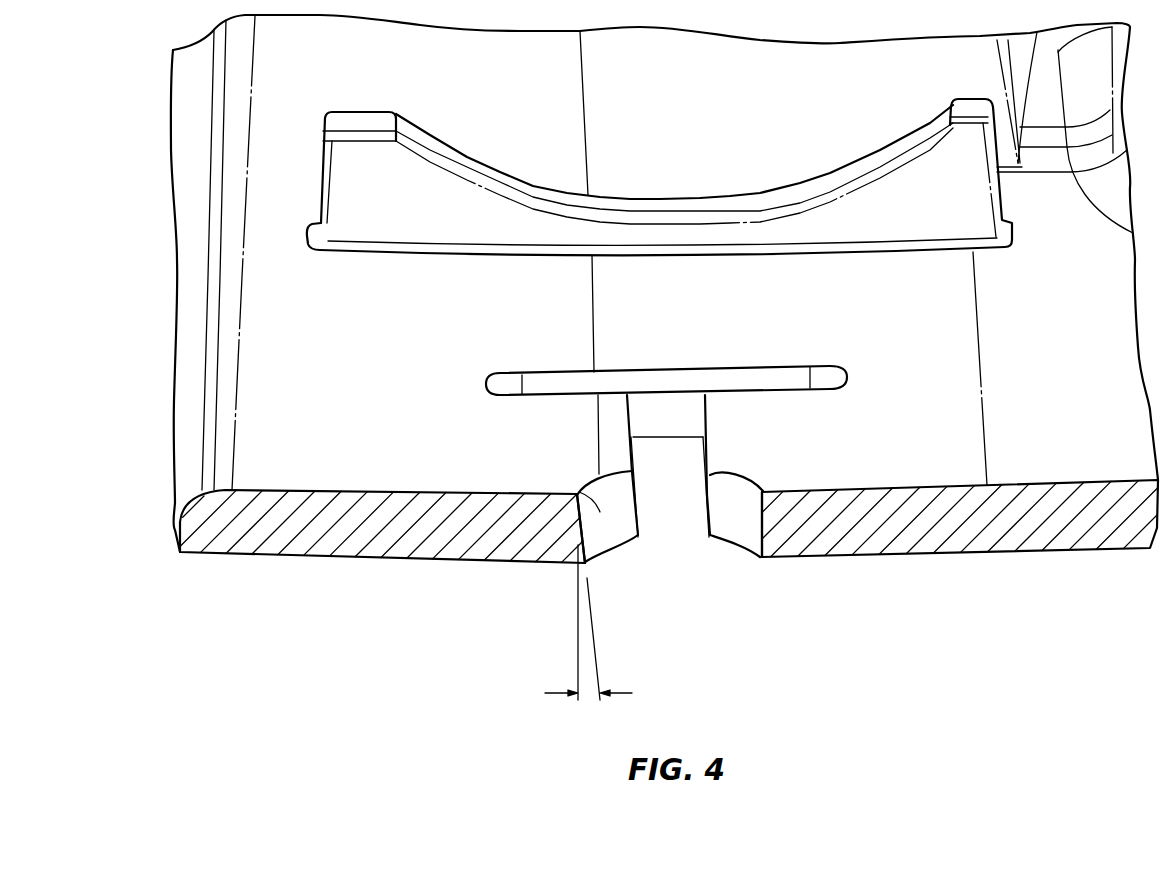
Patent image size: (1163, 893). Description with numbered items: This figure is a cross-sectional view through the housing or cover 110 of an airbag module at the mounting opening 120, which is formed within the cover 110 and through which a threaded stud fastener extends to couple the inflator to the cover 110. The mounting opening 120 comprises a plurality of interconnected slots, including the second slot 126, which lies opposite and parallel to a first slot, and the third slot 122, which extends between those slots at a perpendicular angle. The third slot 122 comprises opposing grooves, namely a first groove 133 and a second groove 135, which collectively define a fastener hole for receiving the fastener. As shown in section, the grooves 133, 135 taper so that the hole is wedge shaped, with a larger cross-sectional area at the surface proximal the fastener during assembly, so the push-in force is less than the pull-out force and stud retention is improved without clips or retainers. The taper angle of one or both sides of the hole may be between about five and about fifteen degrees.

The housing or cover 110 is at (1058, 537).
The mounting opening 120 is at (670, 585).
The third slot 122 is at (700, 437).
The second slot 126 is at (767, 377).
The first groove 133 is at (737, 498).
The second groove 135 is at (577, 493).